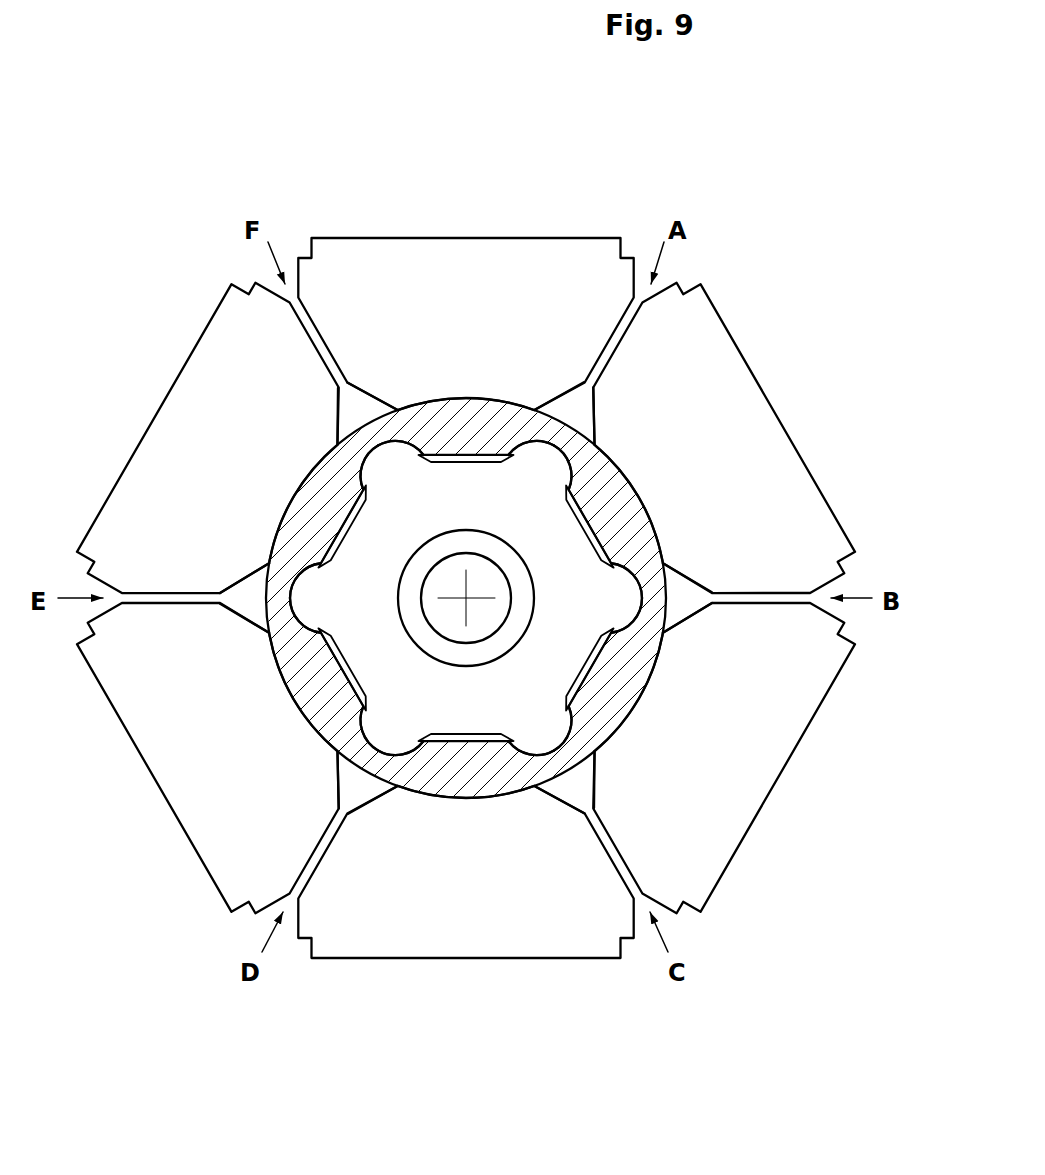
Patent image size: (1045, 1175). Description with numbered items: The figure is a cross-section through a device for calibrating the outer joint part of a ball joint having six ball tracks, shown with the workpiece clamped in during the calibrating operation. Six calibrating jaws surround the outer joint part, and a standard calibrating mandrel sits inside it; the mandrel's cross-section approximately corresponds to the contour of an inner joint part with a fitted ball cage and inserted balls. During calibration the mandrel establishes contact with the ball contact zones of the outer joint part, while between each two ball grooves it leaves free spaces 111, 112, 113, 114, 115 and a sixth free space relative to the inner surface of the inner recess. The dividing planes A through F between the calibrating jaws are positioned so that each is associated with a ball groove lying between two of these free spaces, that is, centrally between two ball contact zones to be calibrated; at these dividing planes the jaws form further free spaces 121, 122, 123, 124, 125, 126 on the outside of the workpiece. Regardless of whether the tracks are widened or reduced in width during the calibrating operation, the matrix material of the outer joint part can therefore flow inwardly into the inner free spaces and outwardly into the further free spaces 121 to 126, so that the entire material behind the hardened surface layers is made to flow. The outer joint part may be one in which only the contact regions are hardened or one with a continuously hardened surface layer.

The free space 111 is at (600, 505).
The free space 112 is at (587, 670).
The free space 113 is at (468, 740).
The free space 114 is at (325, 688).
The free space 115 is at (342, 526).
The further free space 121 is at (577, 412).
The further free space 122 is at (682, 597).
The further free space 123 is at (574, 782).
The further free space 124 is at (362, 786).
The further free space 125 is at (240, 595).
The further free space 126 is at (358, 405).